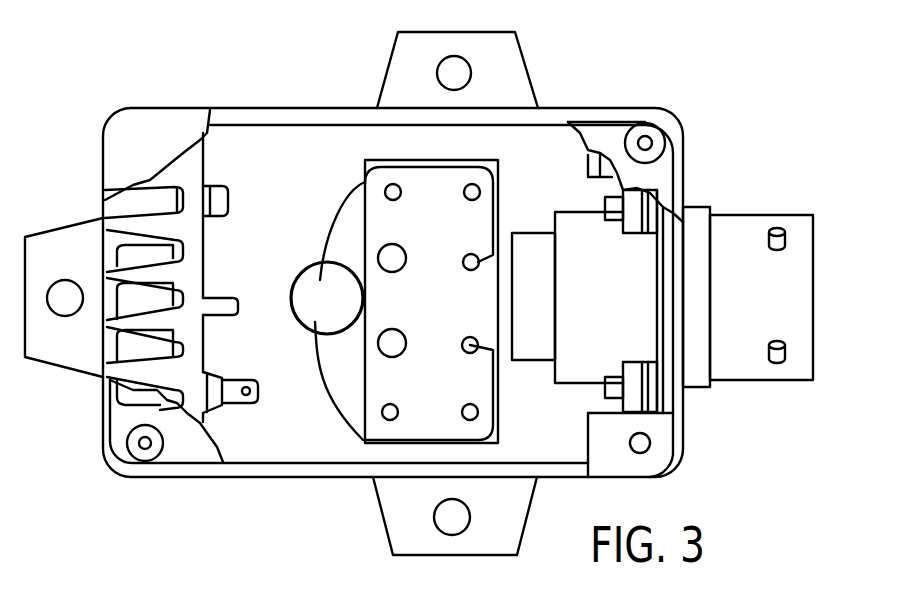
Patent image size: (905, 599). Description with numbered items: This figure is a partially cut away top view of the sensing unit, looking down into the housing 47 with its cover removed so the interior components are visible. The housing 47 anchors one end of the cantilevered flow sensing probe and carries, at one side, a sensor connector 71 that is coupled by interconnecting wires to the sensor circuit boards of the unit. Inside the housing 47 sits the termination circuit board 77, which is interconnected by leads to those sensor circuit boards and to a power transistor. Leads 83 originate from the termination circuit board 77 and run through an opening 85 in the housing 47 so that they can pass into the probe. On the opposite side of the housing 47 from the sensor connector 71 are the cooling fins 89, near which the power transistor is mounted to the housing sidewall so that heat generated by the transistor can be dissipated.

The housing 47 is at (328, 108).
The sensor connector 71 is at (725, 370).
The termination circuit board 77 is at (417, 412).
The leads 83 is at (325, 403).
The opening 85 is at (312, 293).
The cooling fins 89 is at (140, 222).